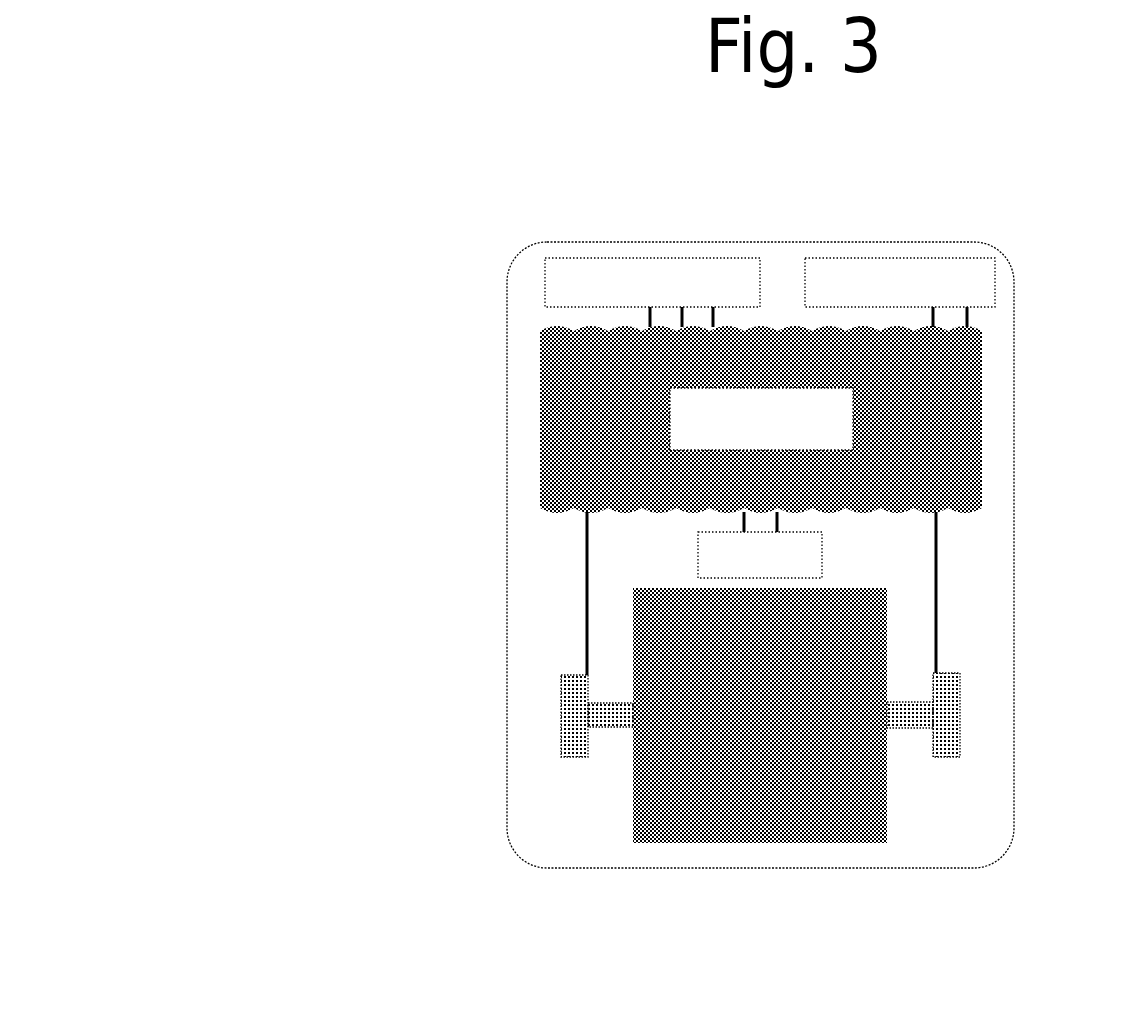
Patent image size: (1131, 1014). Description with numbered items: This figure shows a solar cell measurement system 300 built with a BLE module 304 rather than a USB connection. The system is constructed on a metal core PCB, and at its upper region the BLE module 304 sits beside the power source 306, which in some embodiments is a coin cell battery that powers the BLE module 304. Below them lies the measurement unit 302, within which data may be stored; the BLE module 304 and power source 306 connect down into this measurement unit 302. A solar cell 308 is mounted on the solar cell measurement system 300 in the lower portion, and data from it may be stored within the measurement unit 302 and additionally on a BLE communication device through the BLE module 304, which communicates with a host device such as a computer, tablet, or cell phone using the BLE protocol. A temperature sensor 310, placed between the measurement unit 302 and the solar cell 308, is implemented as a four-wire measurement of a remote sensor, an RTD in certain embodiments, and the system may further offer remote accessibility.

The solar cell measurement system 300 is at (306, 182).
The measurement unit 302 is at (528, 365).
The BLE module 304 is at (553, 245).
The power source 306 is at (975, 247).
The solar cell 308 is at (619, 779).
The temperature sensor 310 is at (847, 547).